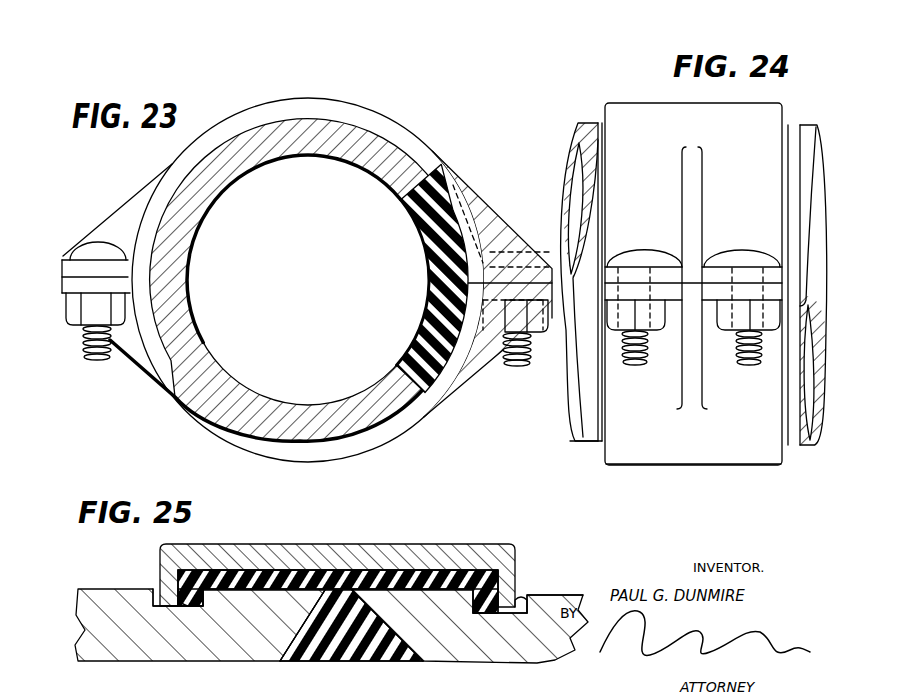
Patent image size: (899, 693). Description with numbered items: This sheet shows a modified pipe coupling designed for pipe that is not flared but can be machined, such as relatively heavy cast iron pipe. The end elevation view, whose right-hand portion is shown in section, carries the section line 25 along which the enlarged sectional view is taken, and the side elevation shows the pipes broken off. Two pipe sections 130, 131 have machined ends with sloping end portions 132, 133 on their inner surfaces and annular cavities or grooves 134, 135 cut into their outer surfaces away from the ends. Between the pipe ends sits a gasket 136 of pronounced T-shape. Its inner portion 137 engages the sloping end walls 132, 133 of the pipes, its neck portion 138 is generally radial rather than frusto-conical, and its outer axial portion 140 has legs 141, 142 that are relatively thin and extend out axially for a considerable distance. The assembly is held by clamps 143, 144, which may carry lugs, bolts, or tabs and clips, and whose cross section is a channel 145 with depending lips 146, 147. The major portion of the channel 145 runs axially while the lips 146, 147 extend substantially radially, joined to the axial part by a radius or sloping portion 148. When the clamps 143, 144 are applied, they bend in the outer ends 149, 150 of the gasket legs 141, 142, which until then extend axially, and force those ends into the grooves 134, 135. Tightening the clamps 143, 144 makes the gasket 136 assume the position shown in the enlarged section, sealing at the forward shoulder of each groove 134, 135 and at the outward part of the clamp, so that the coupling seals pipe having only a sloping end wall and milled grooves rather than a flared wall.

In FIG. 23, the section line 25— 25 is at (245, 88).
In FIG. 24, the pipe section 130 is at (600, 446).
In FIG. 25, the pipe section 130 is at (134, 650).
In FIG. 23, the pipe section 131 is at (187, 258).
In FIG. 24, the pipe section 131 is at (805, 130).
In FIG. 25, the pipe section 131 is at (443, 657).
In FIG. 25, the sloping end portion 132 is at (268, 658).
In FIG. 25, the sloping end portion 133 is at (380, 658).
In FIG. 24, the annular groove 134 is at (603, 393).
In FIG. 25, the annular groove 134 is at (207, 598).
In FIG. 24, the annular groove 135 is at (788, 404).
In FIG. 25, the annular groove 135 is at (521, 619).
In FIG. 25, the gasket 136 is at (343, 582).
In FIG. 23, the inner portion 137 is at (430, 271).
In FIG. 25, the inner portion 137 is at (343, 648).
In FIG. 23, the neck portion 138 is at (430, 295).
In FIG. 25, the neck portion 138 is at (296, 660).
In FIG. 25, the outer axial portion 140 is at (316, 580).
In FIG. 25, the leg 141 is at (203, 574).
In FIG. 25, the leg 142 is at (458, 578).
In FIG. 23, the clamp 143 is at (378, 113).
In FIG. 24, the clamp 143 is at (640, 103).
In FIG. 25, the clamp 143 is at (413, 550).
In FIG. 23, the clamp 144 is at (396, 432).
In FIG. 24, the clamp 144 is at (678, 466).
In FIG. 23, the channel 145 is at (453, 217).
In FIG. 25, the channel 145 is at (287, 572).
In FIG. 25, the depending lip 146 is at (158, 590).
In FIG. 25, the depending lip 147 is at (512, 597).
In FIG. 25, the radius portion 148 is at (166, 562).
In FIG. 25, the outer end 149 is at (190, 604).
In FIG. 25, the outer end 150 is at (473, 612).